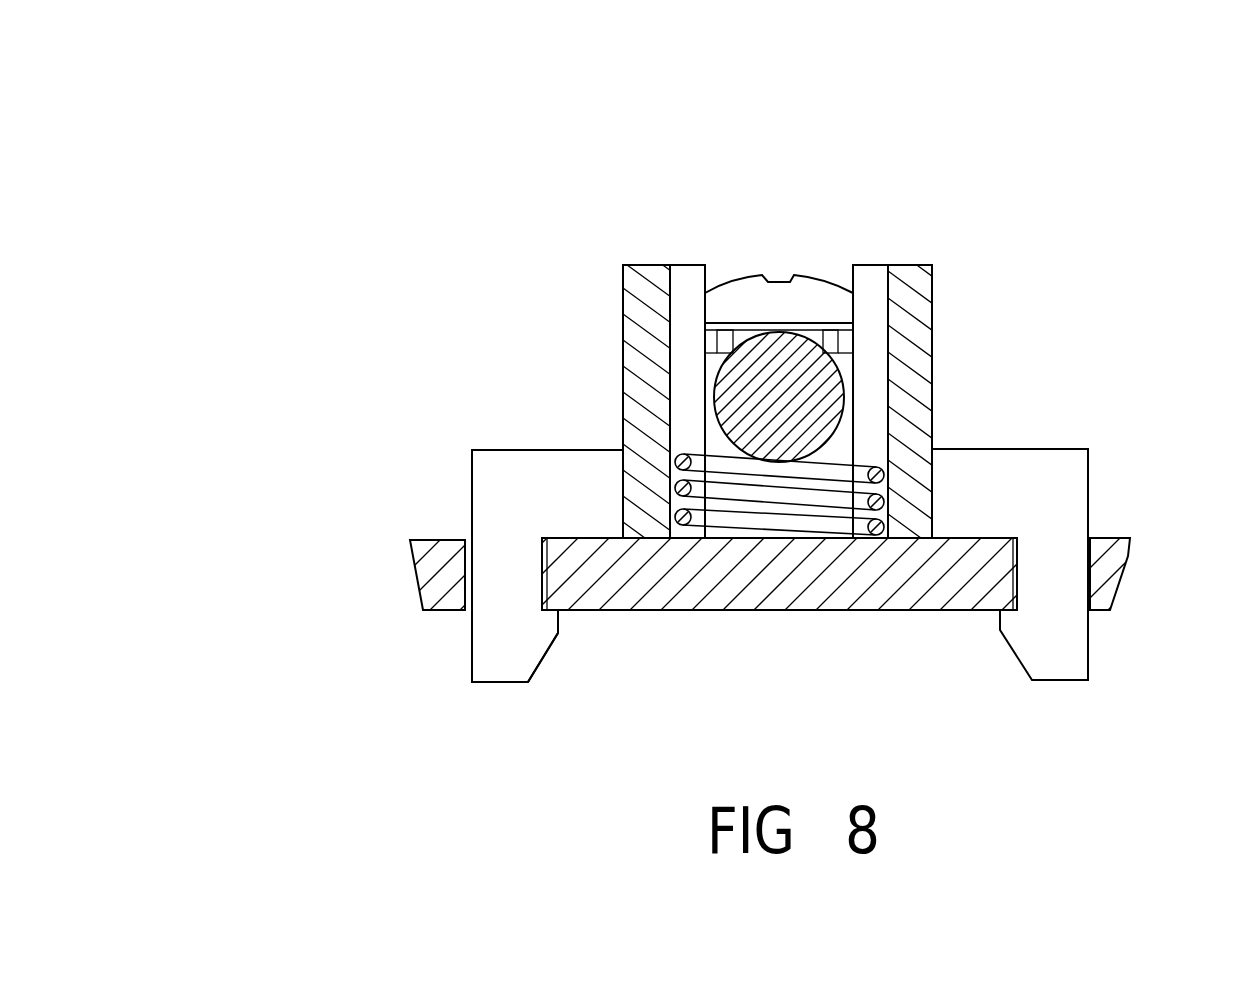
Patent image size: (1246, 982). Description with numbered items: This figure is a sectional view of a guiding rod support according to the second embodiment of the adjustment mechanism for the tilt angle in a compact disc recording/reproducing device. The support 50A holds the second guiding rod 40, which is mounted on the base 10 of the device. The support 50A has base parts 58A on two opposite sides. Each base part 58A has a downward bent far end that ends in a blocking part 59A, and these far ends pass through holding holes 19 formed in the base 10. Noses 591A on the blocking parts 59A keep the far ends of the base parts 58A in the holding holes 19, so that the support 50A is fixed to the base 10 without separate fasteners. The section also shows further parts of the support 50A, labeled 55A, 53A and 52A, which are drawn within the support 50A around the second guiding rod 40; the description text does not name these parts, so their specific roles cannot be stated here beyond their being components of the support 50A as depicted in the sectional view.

The support 50A is at (964, 256).
The sleeve 55A is at (680, 290).
The cap 53A is at (754, 295).
The second guiding rod 40 is at (753, 387).
The coil spring 52A is at (830, 525).
The base part 58A is at (561, 478).
The blocking part 59A is at (485, 630).
The nose 591A is at (535, 642).
The holding hole 19 is at (423, 570).
The base 10 is at (1120, 538).